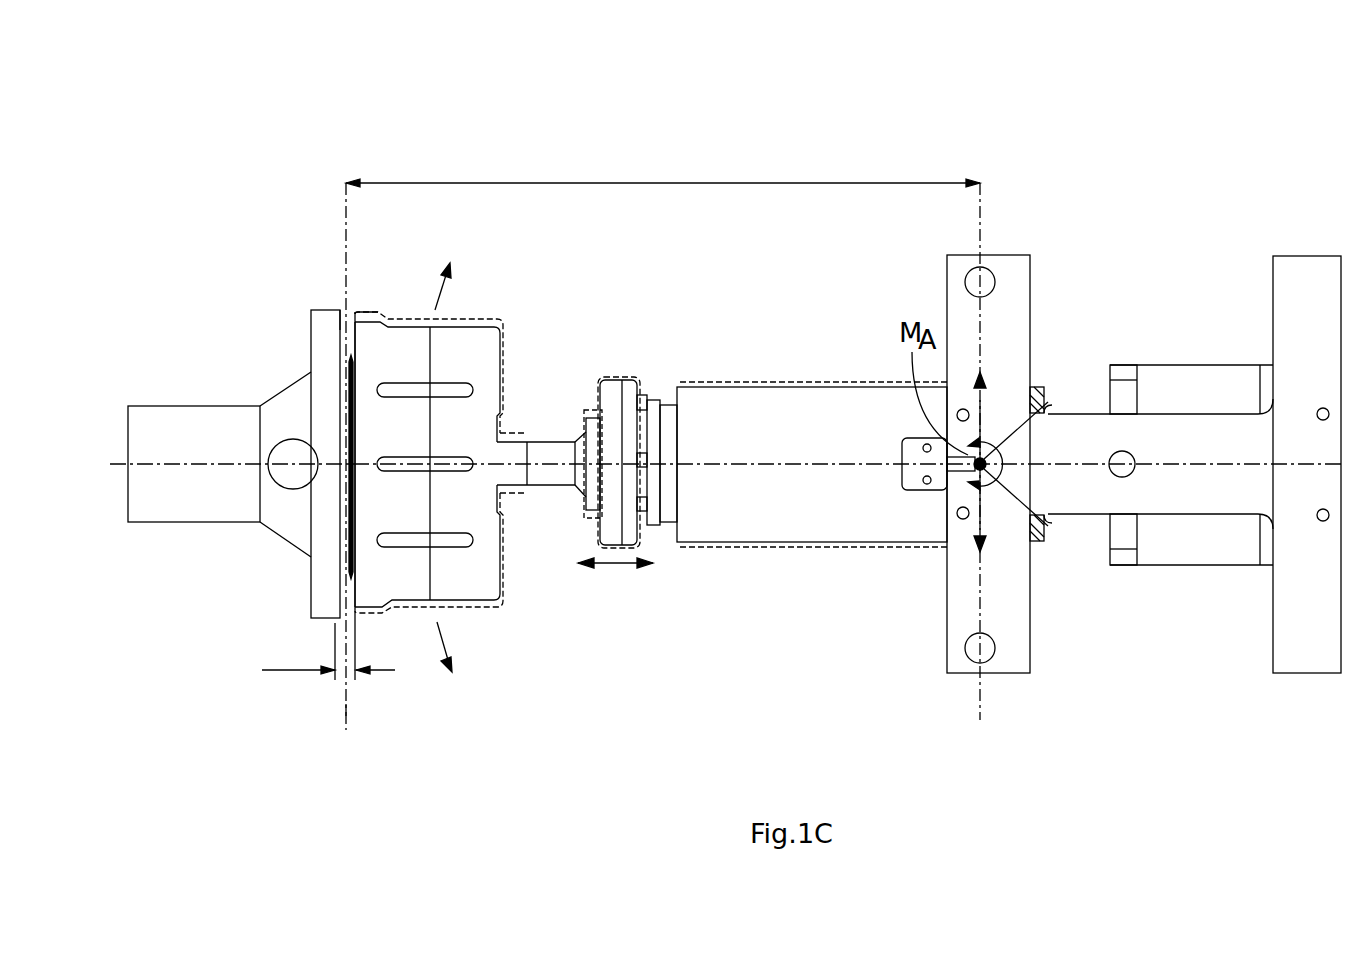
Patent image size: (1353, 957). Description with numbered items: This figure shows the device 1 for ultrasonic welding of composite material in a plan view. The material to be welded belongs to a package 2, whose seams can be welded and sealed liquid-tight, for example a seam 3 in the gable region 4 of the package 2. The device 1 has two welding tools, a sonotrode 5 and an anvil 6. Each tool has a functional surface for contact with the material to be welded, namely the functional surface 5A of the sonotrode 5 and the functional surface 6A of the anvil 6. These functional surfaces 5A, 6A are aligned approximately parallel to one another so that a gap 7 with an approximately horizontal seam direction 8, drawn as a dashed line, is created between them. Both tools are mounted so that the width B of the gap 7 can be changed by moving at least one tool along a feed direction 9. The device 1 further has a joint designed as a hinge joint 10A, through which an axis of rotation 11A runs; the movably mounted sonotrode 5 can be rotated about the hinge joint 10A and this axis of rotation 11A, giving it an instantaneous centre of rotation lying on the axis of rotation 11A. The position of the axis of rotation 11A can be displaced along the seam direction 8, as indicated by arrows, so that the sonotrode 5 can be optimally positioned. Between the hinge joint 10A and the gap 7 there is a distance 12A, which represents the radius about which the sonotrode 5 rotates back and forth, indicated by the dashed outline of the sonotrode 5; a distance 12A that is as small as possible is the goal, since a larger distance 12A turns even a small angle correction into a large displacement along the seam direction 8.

The device 1 is at (1196, 130).
The package 2 is at (187, 505).
The seam 3 is at (356, 437).
The gable region 4 is at (288, 517).
The sonotrode 5 is at (482, 348).
The functional surface 5A is at (356, 312).
The anvil 6 is at (328, 347).
The functional surface 6A is at (338, 307).
The gap 7 is at (354, 292).
The seam direction 8 is at (346, 710).
The feed direction 9 is at (615, 564).
The hinge joint 10A is at (1046, 520).
The axis of rotation 11A is at (1046, 408).
The distance 12A is at (663, 169).
The width B is at (328, 646).